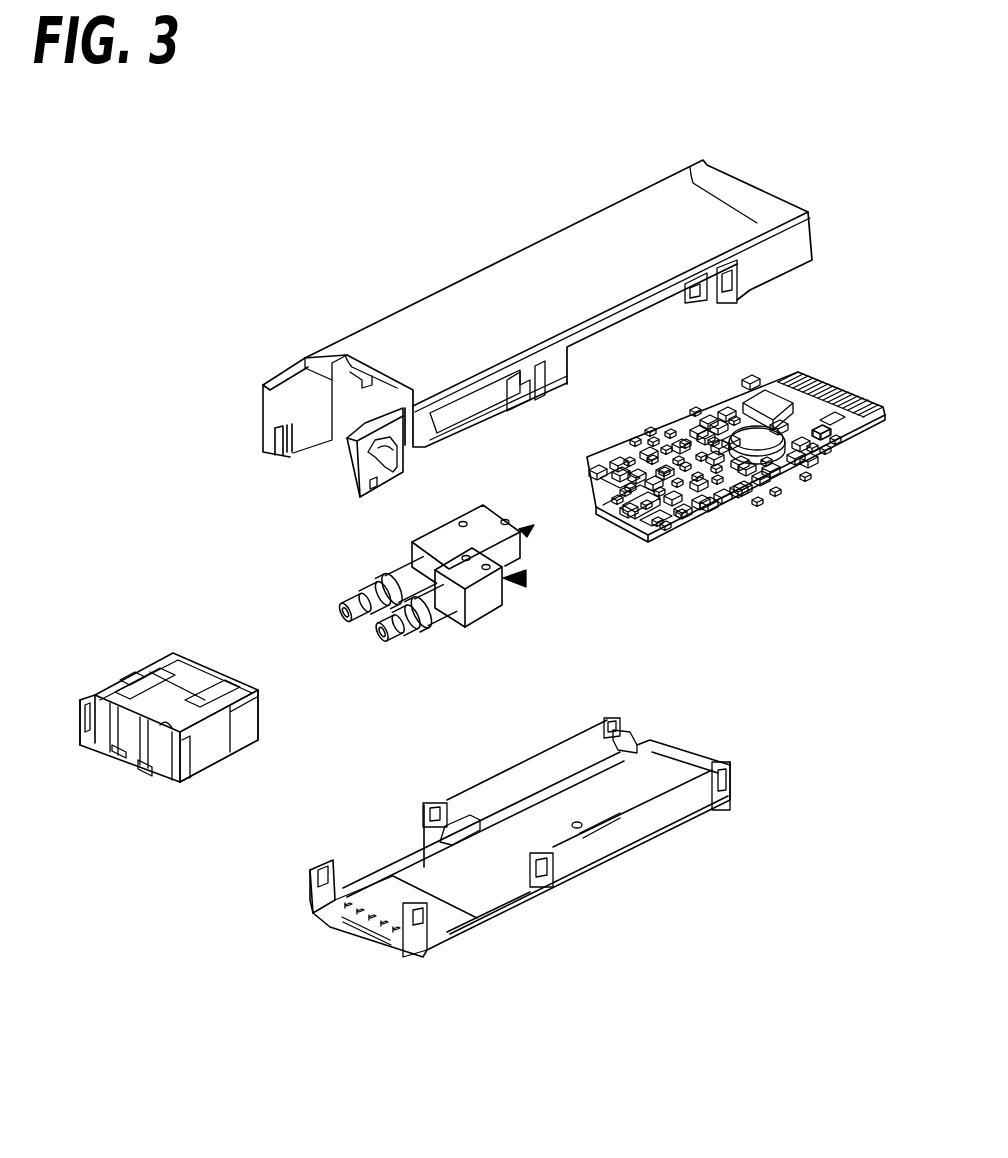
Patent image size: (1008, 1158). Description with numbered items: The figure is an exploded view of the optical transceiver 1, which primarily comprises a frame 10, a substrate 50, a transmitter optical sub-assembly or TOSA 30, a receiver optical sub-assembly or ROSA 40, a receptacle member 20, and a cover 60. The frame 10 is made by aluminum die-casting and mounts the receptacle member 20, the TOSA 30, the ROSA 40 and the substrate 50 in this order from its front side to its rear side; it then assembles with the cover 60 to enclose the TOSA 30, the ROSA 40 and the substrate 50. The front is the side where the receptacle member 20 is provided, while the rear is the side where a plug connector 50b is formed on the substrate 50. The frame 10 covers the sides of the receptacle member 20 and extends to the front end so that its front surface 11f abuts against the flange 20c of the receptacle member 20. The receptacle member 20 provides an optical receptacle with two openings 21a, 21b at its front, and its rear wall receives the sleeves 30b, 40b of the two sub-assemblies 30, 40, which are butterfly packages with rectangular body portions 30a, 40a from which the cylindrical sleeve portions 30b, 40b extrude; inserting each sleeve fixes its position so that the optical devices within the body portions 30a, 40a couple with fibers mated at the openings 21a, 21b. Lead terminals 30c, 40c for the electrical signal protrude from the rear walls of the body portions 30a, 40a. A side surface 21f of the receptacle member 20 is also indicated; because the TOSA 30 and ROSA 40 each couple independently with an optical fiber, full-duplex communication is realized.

The optical transceiver 1 is at (280, 277).
The frame 10 is at (364, 350).
The front surface 11f is at (262, 441).
The receptacle member 20 is at (150, 652).
The opening 21a is at (118, 750).
The opening 21b is at (142, 771).
The connector side surface 21f is at (217, 743).
The flange 20c is at (180, 789).
The transmitter optical sub-assembly (TOSA) 30 is at (393, 531).
The body portion 30a is at (442, 540).
The sleeve portion 30b is at (402, 555).
The lead terminals 30c is at (527, 528).
The receiver optical sub-assembly (ROSA) 40 is at (512, 625).
The body portion 40a is at (495, 618).
The sleeve portion 40b is at (463, 632).
The lead terminals 40c is at (528, 578).
The substrate 50 is at (735, 524).
The plug connector 50b is at (879, 420).
The cover 60 is at (400, 796).